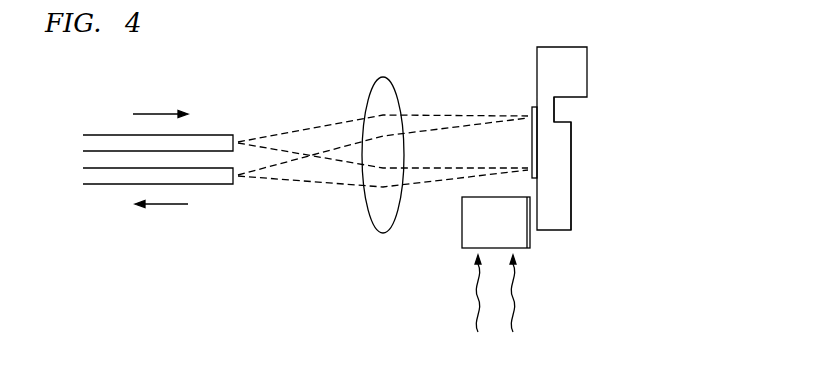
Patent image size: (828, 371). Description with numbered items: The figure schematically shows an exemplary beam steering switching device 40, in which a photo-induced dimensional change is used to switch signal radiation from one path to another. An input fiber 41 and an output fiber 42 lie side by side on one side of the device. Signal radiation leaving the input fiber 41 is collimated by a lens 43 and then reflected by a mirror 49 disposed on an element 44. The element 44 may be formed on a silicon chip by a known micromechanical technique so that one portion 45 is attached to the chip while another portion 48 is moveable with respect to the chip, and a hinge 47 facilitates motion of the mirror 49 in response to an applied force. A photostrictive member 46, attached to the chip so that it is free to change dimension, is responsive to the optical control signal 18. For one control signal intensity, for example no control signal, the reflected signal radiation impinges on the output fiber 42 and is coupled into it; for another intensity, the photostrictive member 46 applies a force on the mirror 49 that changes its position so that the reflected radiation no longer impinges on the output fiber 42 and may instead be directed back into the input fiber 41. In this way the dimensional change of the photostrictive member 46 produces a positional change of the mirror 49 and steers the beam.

The beam steering device 40 is at (337, 54).
The input fiber 41 is at (202, 135).
The output fiber 42 is at (117, 184).
The lens 43 is at (373, 227).
The element 44 is at (650, 251).
The attached portion 45 is at (587, 63).
The photostrictive member 46 is at (462, 245).
The hinge 47 is at (557, 113).
The moveable portion 48 is at (571, 155).
The mirror 49 is at (533, 108).
The optical control signal 18 is at (472, 308).